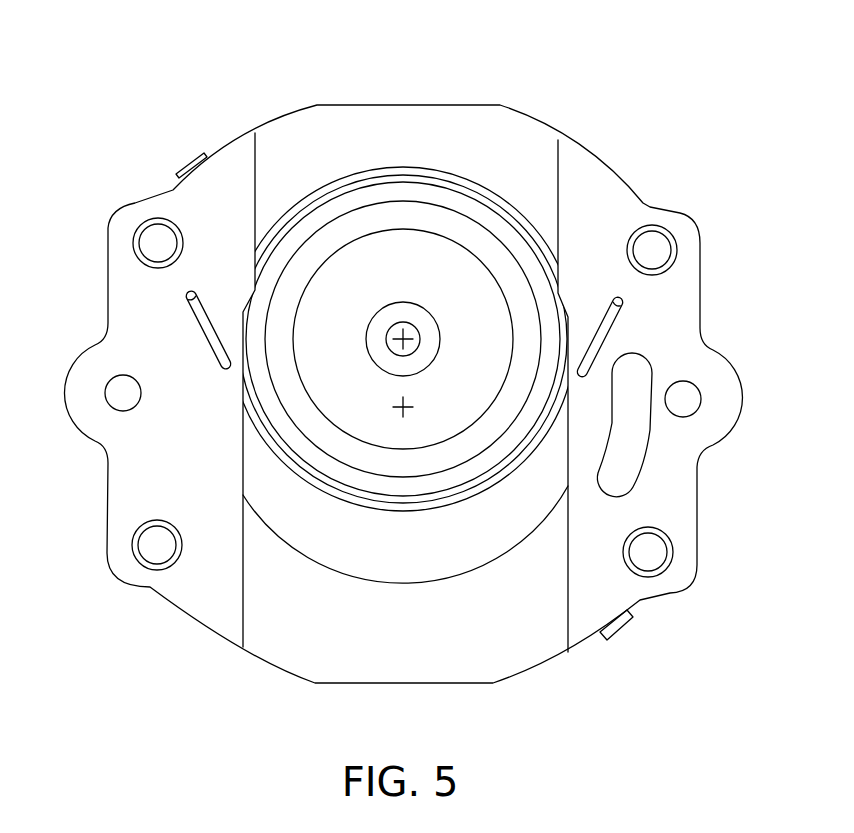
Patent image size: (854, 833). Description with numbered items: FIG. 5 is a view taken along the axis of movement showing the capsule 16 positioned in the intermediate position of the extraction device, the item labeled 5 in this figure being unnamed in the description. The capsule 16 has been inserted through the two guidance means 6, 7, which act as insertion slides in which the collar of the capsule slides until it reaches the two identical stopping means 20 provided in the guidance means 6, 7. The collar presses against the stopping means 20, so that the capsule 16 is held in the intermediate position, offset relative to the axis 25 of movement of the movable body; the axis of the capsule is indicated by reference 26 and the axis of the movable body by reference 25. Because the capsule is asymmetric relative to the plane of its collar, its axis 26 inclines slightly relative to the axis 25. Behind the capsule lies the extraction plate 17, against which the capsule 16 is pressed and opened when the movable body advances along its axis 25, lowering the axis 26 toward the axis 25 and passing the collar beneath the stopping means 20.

The pump housing 5 is at (425, 142).
The guidance means 6 is at (567, 142).
The guidance means 7 is at (250, 138).
The capsule 16 is at (383, 223).
The extraction plate 17 is at (485, 190).
The stopping means 20 is at (193, 312).
The axis of the movable body 25 is at (398, 412).
The axis of the capsule 26 is at (405, 338).